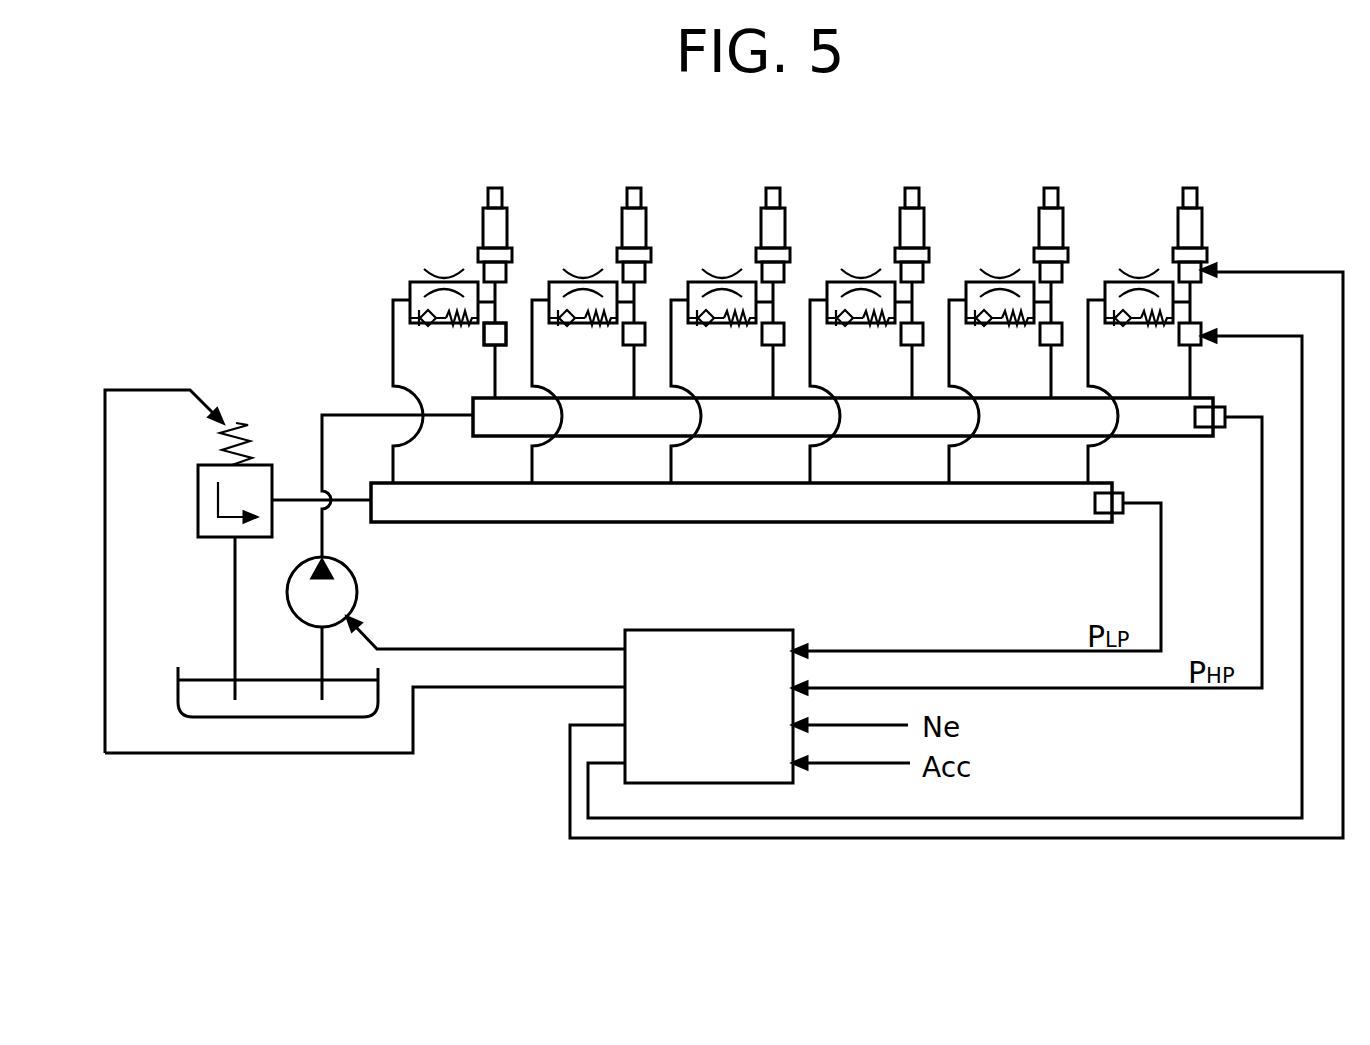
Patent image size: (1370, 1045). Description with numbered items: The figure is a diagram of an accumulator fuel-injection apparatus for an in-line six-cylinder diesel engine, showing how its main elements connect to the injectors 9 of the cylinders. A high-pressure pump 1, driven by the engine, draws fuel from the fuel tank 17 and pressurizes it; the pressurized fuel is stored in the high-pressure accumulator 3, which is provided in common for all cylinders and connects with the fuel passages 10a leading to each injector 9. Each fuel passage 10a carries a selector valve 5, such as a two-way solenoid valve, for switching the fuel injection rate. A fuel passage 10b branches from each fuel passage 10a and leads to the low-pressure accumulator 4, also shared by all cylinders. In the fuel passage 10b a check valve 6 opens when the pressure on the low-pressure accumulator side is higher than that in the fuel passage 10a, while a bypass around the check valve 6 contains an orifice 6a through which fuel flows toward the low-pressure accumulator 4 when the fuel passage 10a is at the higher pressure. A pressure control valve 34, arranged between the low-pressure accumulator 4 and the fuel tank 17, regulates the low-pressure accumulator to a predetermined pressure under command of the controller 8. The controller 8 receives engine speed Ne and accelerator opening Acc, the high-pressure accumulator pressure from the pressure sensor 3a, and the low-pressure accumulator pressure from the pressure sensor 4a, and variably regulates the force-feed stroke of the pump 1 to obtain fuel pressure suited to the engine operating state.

The high-pressure pump 1 is at (357, 578).
The high-pressure accumulator 3 is at (1180, 440).
The pressure sensor 3a is at (1213, 405).
The low-pressure accumulator 4 is at (535, 527).
The pressure sensor 4a is at (1115, 515).
The selector valve 5 is at (507, 333).
The check valve 6 is at (449, 328).
The orifice 6a is at (440, 270).
The controller 8 is at (730, 630).
The injector 9 is at (508, 213).
The fuel passage 10a is at (321, 425).
The fuel passage 10b is at (393, 322).
The fuel tank 17 is at (210, 680).
The pressure control valve 34 is at (198, 497).